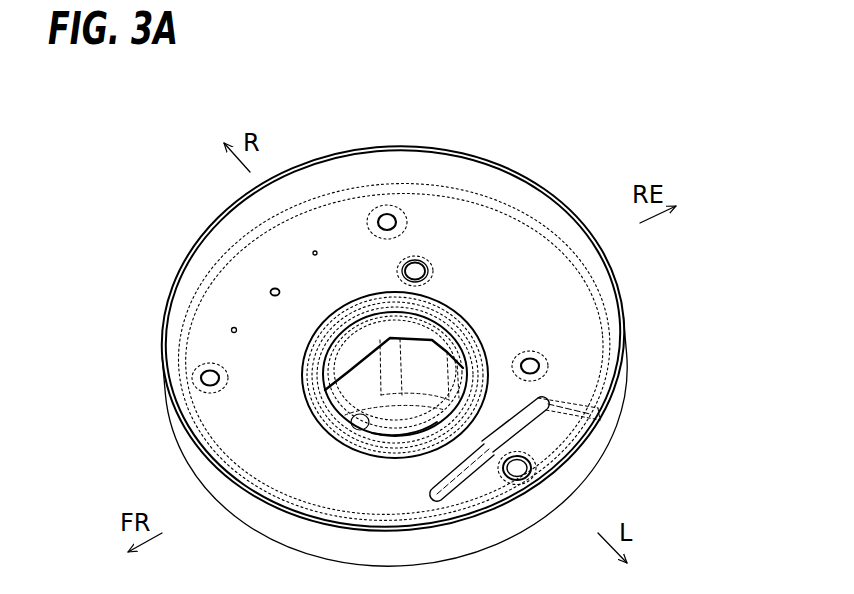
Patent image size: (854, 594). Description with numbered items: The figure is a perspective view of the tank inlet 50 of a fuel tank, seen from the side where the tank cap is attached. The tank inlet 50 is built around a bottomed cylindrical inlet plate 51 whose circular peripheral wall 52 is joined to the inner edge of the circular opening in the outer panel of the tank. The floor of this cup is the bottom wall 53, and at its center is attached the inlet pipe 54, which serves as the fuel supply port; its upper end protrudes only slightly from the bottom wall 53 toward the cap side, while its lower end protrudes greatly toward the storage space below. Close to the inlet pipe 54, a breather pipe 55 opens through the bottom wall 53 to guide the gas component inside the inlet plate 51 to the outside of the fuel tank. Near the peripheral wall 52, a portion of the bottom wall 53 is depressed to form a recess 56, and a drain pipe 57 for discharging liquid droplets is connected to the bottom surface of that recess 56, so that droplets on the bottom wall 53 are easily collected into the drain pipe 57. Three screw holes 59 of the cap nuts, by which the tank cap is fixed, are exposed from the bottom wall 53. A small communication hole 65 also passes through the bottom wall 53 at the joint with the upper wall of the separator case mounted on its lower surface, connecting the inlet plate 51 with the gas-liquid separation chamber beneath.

The tank inlet 50 is at (358, 333).
The inlet plate 51 is at (197, 236).
The peripheral wall 52 is at (162, 366).
The bottom wall 53 is at (425, 205).
The inlet pipe 54 is at (452, 305).
The breather pipe 55 is at (420, 258).
The recess 56 is at (563, 410).
The drain pipe 57 is at (455, 472).
The screw holes 59 is at (387, 214).
The communication hole 65 is at (276, 287).